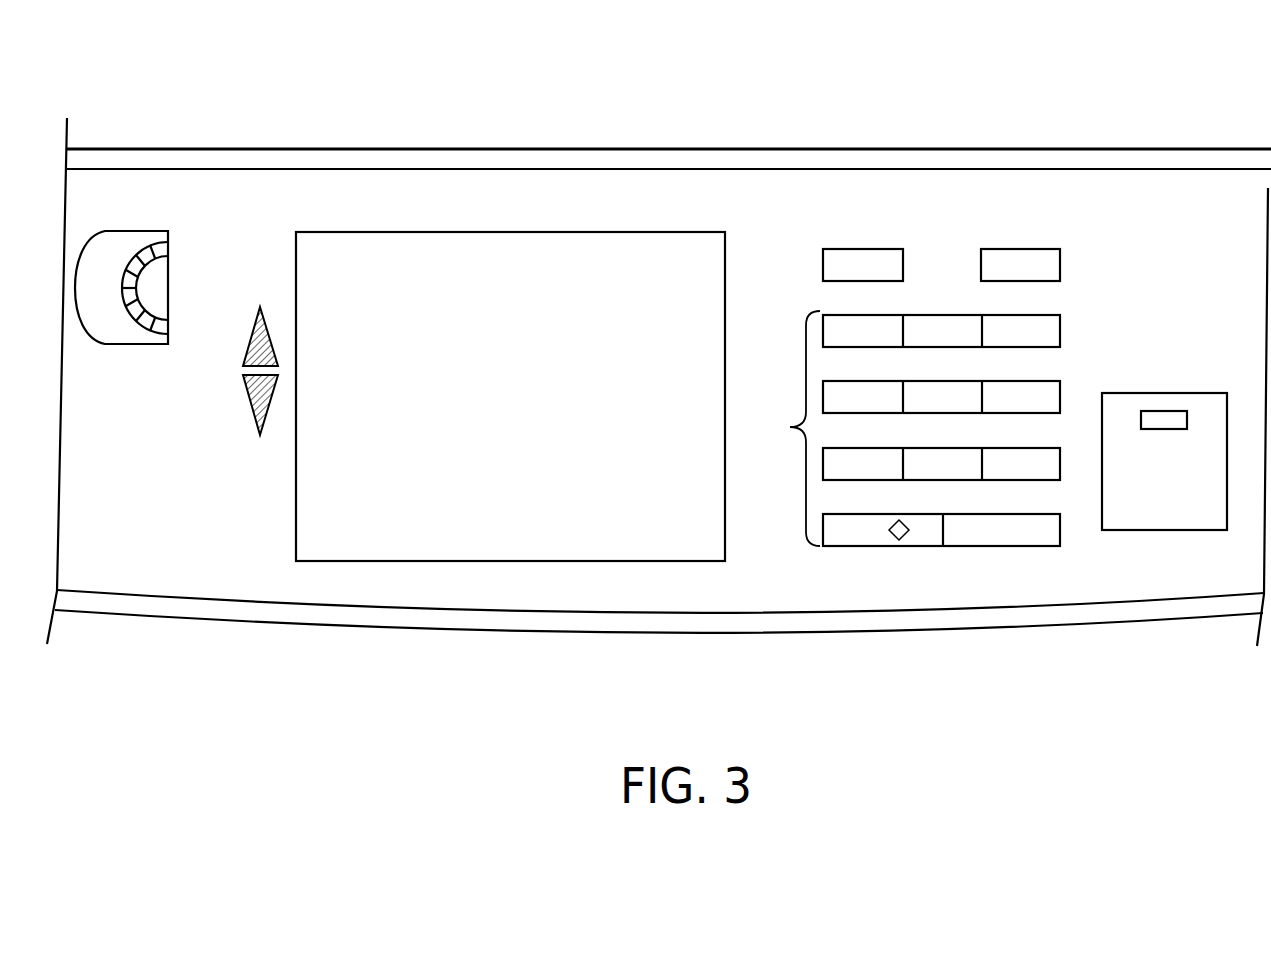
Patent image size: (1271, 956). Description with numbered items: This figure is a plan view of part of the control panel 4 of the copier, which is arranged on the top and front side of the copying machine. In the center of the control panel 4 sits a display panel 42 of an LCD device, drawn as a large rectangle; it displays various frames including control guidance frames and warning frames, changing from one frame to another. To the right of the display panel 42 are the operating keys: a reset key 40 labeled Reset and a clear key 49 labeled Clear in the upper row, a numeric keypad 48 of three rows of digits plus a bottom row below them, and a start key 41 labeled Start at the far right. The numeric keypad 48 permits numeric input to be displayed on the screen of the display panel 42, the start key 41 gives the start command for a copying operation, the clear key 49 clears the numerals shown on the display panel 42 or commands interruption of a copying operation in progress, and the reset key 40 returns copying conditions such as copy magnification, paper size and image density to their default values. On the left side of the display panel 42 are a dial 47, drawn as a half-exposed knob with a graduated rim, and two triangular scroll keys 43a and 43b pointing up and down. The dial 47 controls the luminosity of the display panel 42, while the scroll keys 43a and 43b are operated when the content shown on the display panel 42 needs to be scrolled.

The control panel 4 is at (1191, 109).
The reset key 40 is at (903, 250).
The start key 41 is at (1154, 522).
The display panel 42 is at (467, 245).
The scroll key 43a is at (249, 341).
The scroll key 43b is at (249, 404).
The dial 47 is at (128, 232).
The numeric keypad 48 is at (790, 427).
The clear key 49 is at (1060, 250).